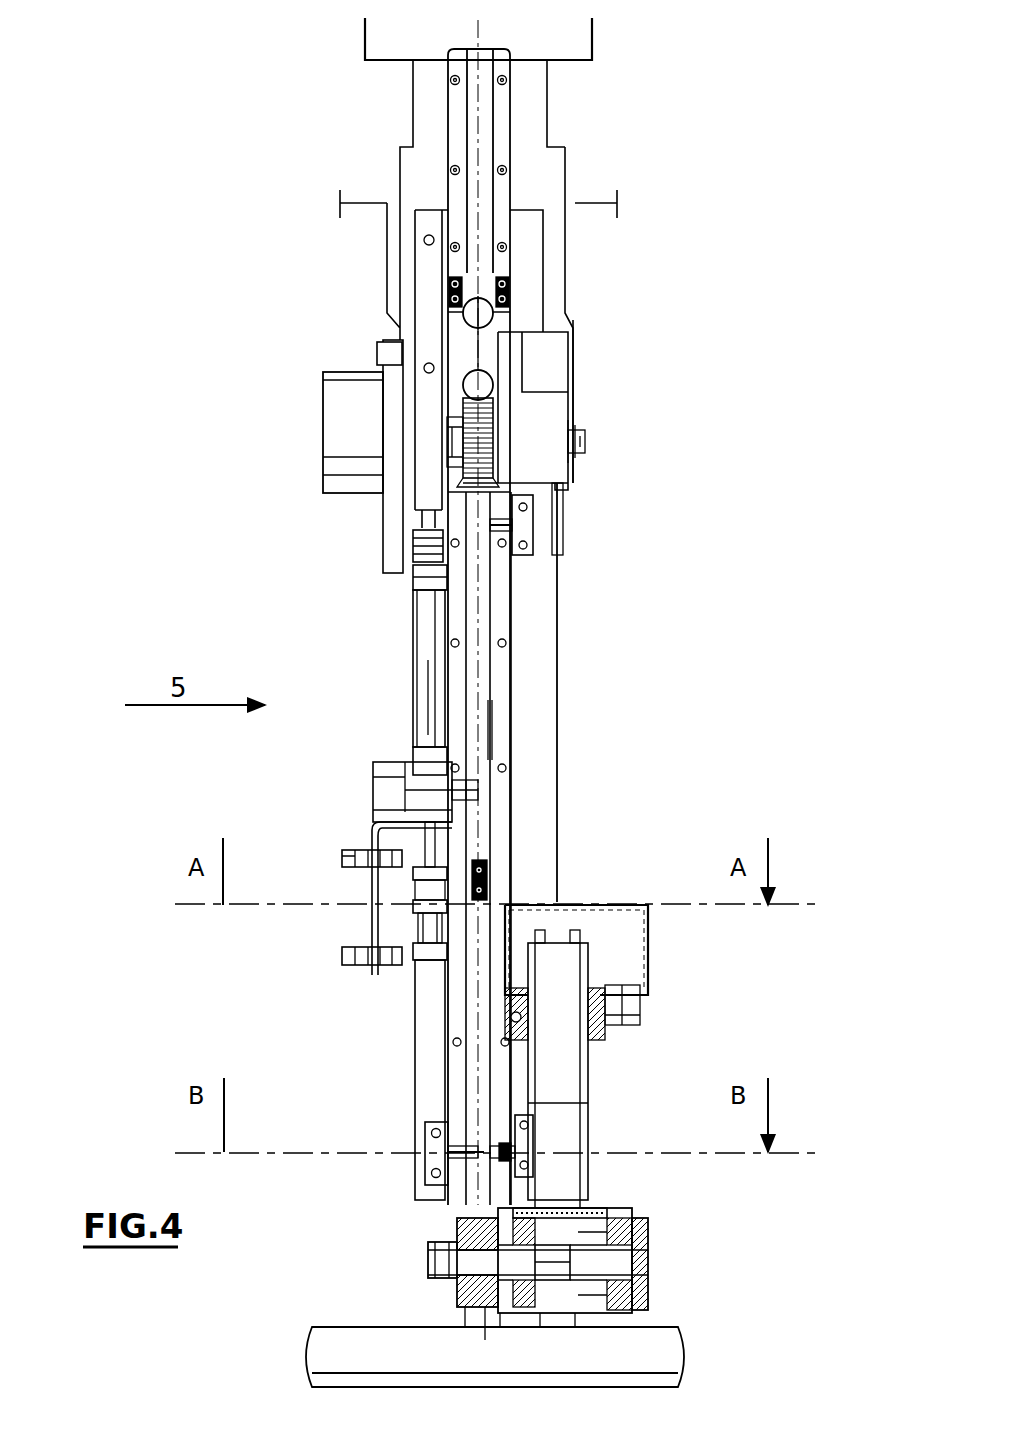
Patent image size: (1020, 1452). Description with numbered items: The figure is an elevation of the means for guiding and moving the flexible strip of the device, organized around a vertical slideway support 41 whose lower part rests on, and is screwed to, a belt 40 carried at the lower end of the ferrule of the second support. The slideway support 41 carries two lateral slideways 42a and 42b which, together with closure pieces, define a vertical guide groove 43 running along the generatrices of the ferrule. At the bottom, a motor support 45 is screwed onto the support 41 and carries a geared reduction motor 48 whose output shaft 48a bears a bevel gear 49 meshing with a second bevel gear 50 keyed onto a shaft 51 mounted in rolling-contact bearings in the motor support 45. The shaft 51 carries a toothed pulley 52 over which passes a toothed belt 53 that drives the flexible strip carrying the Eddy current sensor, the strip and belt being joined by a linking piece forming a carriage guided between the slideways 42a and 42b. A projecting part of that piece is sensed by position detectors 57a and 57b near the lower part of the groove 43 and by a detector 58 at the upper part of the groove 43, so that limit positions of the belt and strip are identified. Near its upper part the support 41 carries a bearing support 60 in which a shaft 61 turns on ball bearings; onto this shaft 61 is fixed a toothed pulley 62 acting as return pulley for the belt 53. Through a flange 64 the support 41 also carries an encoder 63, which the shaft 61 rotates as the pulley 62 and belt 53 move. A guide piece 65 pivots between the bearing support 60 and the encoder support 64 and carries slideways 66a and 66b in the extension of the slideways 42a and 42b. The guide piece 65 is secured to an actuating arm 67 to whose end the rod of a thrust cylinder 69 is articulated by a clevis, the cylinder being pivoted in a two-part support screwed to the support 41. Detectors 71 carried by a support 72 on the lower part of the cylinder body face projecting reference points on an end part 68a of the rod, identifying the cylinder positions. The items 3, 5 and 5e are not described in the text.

The frame 3 is at (387, 48).
The column 5 is at (533, 88).
The column extension 5e is at (553, 205).
The belt 40 is at (677, 1350).
The slideway support 41 is at (538, 863).
The lateral slideway 42a is at (502, 788).
The lateral slideway 42b is at (458, 695).
The vertical guide groove 43 is at (492, 687).
The motor support 45 is at (650, 1222).
The geared reduction motor 48 is at (573, 1120).
The output shaft 48a is at (587, 1203).
The bevel gear 49 is at (632, 1213).
The second bevel gear 50 is at (583, 1287).
The shaft 51 is at (607, 1263).
The toothed pulley 52 is at (470, 1308).
The toothed belt 53 is at (486, 730).
The position detector 57a is at (418, 1147).
The position detector 57b is at (493, 1143).
The detector 58 is at (530, 555).
The bearing support 60 is at (552, 457).
The shaft 61 is at (586, 445).
The toothed pulley 62 is at (493, 412).
The encoder 63 is at (342, 480).
The flange 64 is at (398, 550).
The guide piece 65 is at (480, 160).
The slideway 66a is at (500, 122).
The slideway 66b is at (457, 97).
The actuating arm 67 is at (425, 227).
The end part of the rod 68a is at (415, 962).
The thrust cylinder 69 is at (423, 632).
The detectors 71 is at (348, 952).
The support 72 is at (372, 823).